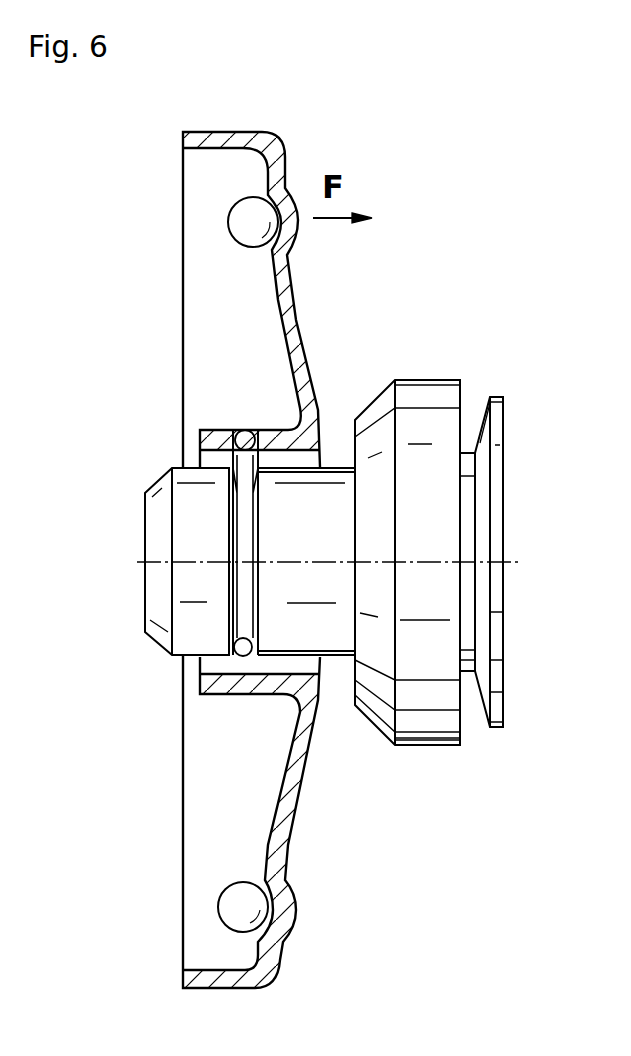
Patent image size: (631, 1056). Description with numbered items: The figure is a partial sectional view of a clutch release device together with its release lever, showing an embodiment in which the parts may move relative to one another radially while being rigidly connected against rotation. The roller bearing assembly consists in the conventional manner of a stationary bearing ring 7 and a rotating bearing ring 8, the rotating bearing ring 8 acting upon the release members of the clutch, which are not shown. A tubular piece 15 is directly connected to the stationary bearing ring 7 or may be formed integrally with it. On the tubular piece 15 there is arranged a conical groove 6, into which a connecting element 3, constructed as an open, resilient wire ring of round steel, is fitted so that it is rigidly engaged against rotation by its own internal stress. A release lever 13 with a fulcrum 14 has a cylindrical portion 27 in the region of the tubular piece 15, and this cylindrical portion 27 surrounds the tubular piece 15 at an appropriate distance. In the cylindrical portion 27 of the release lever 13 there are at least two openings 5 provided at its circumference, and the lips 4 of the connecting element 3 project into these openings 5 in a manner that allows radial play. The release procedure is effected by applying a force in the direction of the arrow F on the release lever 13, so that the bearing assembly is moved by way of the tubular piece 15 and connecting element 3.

The connecting element 3 is at (243, 657).
The lips 4 is at (241, 436).
The openings 5 is at (254, 432).
The conical groove 6 is at (245, 538).
The stationary bearing ring 7 is at (427, 730).
The rotating bearing ring 8 is at (493, 693).
The release lever 13 is at (288, 345).
The fulcrum 14 is at (252, 905).
The tubular piece 15 is at (187, 630).
The cylindrical portion 27 is at (248, 688).